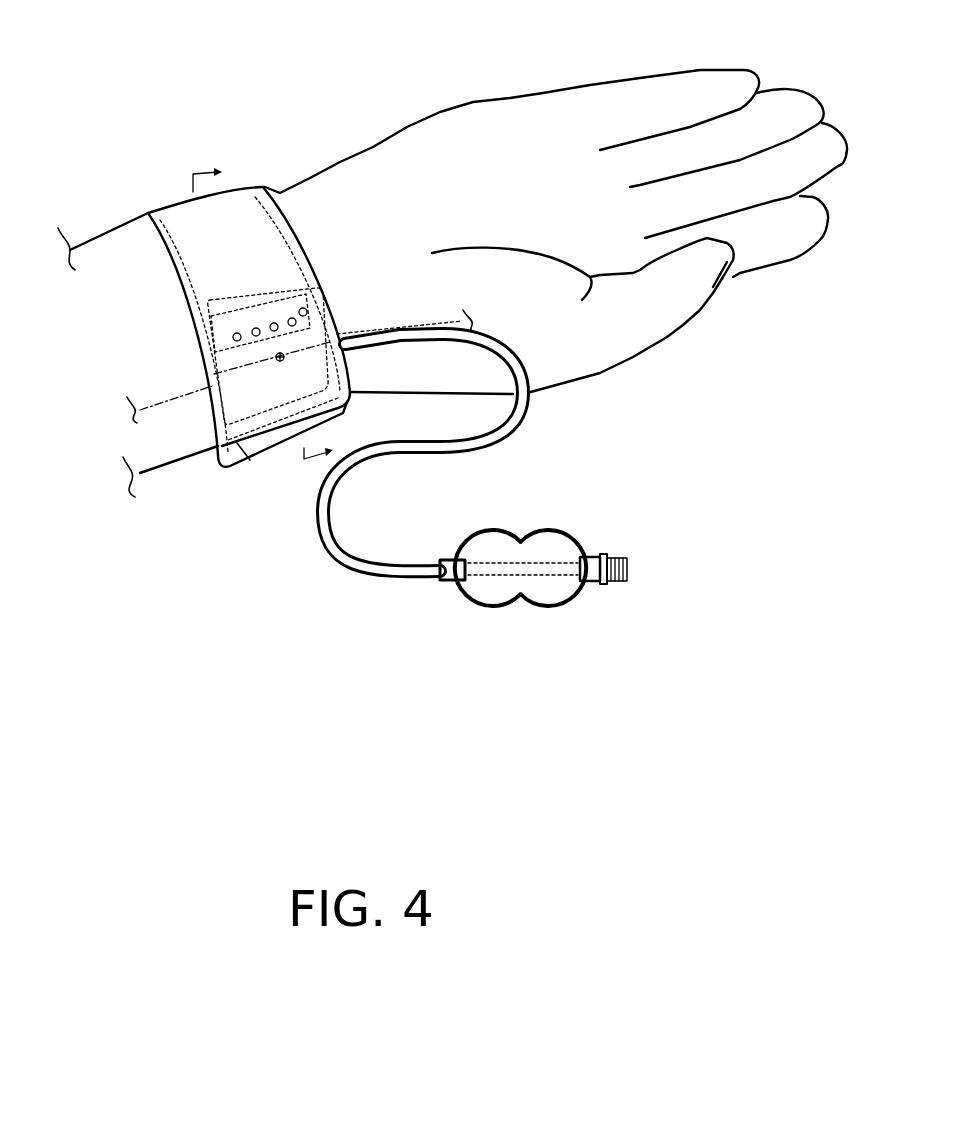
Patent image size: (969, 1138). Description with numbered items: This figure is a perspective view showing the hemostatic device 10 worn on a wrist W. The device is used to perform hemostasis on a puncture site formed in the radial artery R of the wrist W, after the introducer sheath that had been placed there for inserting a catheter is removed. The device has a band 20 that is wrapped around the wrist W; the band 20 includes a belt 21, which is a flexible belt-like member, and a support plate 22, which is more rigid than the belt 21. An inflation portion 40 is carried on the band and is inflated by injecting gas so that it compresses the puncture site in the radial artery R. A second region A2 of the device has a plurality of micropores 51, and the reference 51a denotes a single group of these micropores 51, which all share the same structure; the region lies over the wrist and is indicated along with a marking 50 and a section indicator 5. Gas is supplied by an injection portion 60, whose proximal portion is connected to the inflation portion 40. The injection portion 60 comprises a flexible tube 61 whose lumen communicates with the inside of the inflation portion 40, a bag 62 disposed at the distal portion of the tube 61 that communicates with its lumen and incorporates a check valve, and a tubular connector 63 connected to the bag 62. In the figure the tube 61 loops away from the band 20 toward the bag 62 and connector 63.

The hemostatic device 10 is at (148, 186).
The band 20 is at (311, 232).
The belt 21 is at (268, 186).
The support plate 22 is at (296, 186).
The inflation portion 40 is at (280, 425).
The sensor unit 50 is at (212, 357).
The micropores 51 is at (207, 316).
The group of micropores 51a is at (257, 314).
The injection portion 60 is at (494, 544).
The tube 61 is at (390, 578).
The bag 62 is at (480, 603).
The connector 63 is at (623, 612).
The cross-section line 5 is at (274, 302).
The second region A2 is at (113, 365).
The radial artery R is at (152, 407).
The wrist W is at (198, 452).